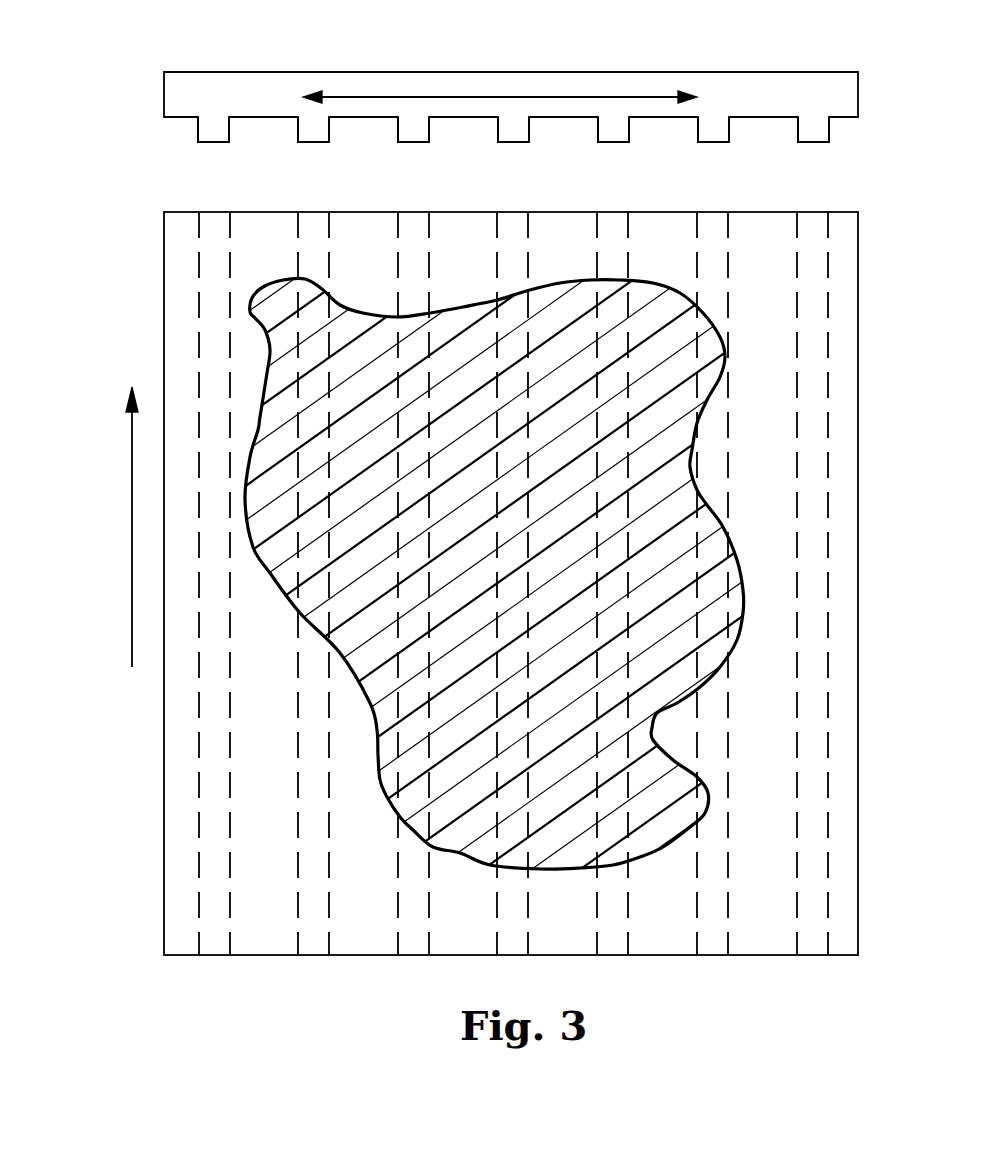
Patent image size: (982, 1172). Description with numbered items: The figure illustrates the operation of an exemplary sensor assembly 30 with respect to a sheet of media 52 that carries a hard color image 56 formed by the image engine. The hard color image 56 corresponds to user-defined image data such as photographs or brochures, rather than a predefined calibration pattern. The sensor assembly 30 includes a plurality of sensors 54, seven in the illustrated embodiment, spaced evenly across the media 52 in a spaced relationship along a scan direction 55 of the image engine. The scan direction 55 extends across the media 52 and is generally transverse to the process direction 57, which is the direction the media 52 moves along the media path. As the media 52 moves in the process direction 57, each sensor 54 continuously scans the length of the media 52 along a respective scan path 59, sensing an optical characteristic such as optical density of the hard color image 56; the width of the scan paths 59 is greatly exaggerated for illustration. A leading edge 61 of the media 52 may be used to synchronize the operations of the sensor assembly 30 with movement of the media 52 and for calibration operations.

The sensor assembly 30 is at (785, 81).
The sensors 54 is at (305, 142).
The scan direction 55 is at (498, 97).
The media 52 is at (164, 250).
The hard color image 56 is at (643, 297).
The process direction 57 is at (131, 471).
The scan paths 59 is at (317, 349).
The leading edge 61 is at (515, 212).